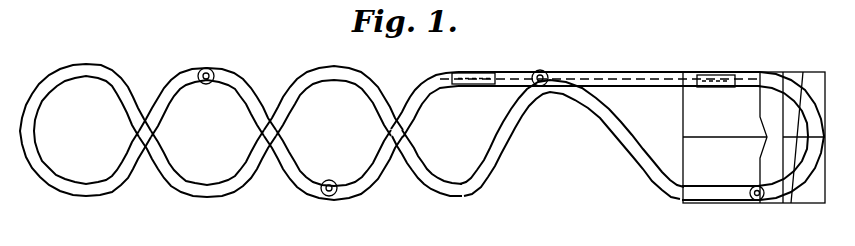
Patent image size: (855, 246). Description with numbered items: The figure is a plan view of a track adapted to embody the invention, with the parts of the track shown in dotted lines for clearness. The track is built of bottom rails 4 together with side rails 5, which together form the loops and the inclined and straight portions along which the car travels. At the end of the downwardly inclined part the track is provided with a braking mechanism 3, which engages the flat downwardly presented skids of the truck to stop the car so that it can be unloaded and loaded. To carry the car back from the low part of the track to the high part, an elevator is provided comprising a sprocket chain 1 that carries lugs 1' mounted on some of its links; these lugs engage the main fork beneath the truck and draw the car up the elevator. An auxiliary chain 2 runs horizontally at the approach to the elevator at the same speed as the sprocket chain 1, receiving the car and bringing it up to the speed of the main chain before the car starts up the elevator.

The sprocket chain 1 is at (609, 66).
The lugs 1' is at (473, 99).
The auxiliary chain 2 is at (708, 88).
The braking mechanism 3 is at (732, 201).
The bottom rails 4 is at (305, 89).
The side rails 5 is at (323, 89).